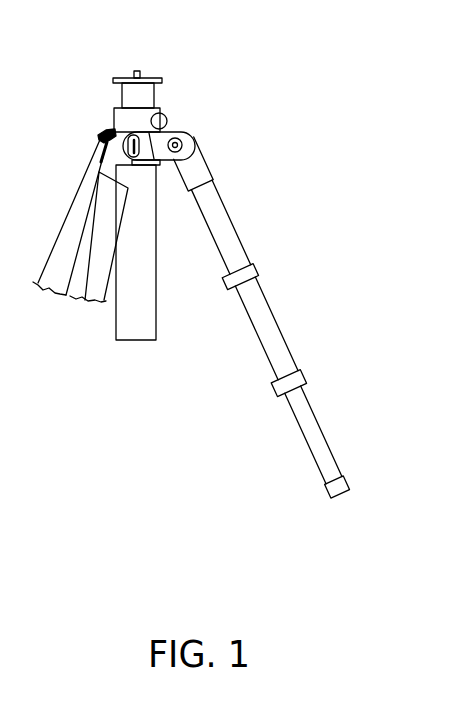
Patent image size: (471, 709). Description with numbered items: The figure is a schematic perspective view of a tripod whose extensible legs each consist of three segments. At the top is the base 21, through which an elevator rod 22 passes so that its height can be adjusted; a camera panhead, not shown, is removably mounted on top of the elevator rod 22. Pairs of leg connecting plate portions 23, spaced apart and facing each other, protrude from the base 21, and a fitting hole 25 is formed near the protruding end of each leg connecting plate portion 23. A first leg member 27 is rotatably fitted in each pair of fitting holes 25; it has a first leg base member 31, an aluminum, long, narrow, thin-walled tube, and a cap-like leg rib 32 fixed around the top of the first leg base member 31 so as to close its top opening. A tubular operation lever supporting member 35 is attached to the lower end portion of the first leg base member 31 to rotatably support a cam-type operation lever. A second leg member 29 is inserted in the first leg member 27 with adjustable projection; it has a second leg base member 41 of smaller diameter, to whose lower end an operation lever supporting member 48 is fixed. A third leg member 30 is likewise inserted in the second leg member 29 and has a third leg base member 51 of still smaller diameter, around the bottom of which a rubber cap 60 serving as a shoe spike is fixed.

The base 21 is at (113, 128).
The elevator rod 22 is at (135, 90).
The leg connecting plate portion 23 is at (103, 132).
The fitting hole 25 is at (178, 139).
The first leg member 27 is at (257, 219).
The second leg member 29 is at (291, 314).
The third leg member 30 is at (337, 424).
The first leg base member 31 is at (207, 222).
The leg rib 32 is at (253, 162).
The operation lever supporting member 35 is at (228, 287).
The second leg base member 41 is at (262, 334).
The operation lever supporting member 48 is at (276, 396).
The third leg base member 51 is at (315, 457).
The rubber cap 60 is at (348, 480).